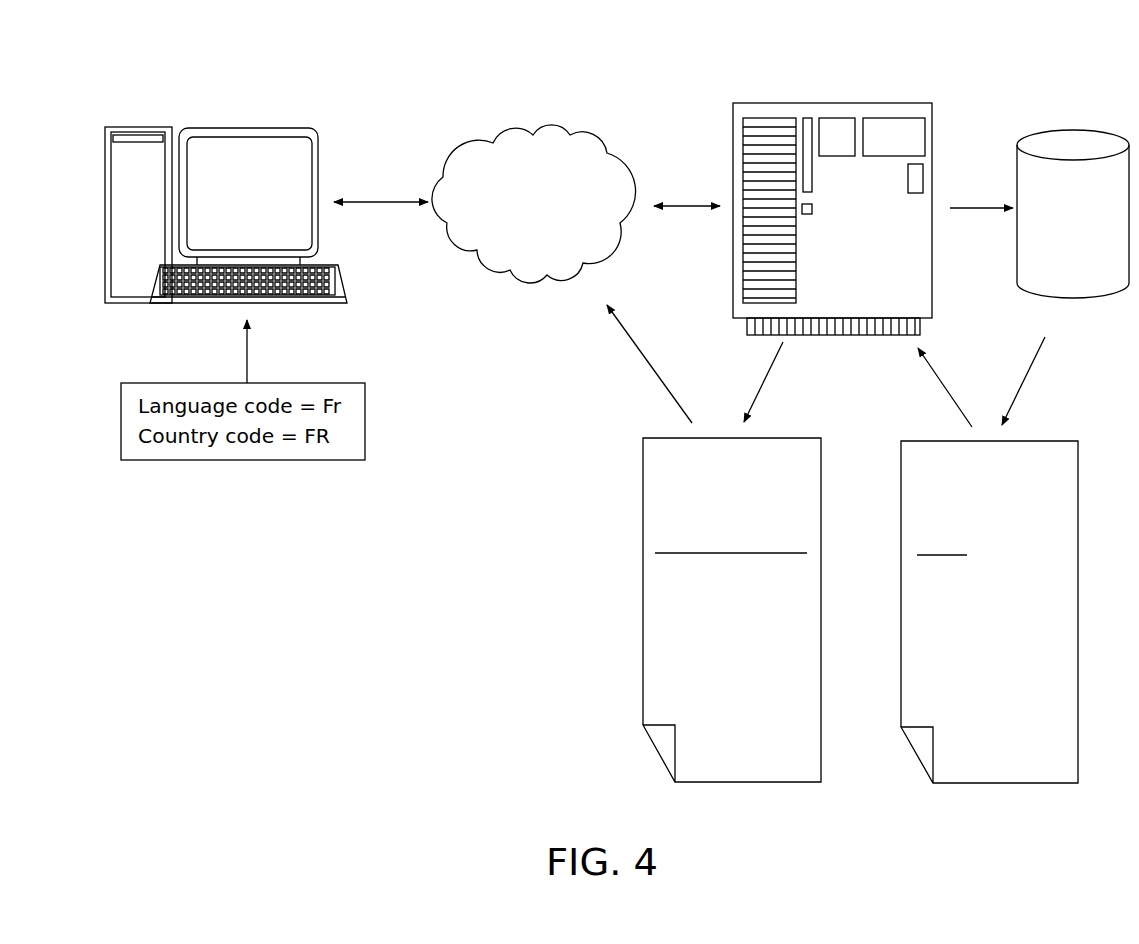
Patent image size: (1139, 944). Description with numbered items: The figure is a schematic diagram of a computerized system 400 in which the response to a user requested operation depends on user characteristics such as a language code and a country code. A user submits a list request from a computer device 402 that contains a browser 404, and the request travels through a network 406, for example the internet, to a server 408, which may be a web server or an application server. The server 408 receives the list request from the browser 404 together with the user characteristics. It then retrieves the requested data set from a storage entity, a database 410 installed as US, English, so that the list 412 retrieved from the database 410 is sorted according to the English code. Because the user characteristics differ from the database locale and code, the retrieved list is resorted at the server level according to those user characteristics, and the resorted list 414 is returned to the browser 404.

The computerized system 400 is at (172, 70).
The computer device 402 is at (260, 130).
The browser 404 is at (293, 157).
The network 406 is at (564, 249).
The server 408 is at (933, 160).
The database 410 is at (1068, 130).
The list 412 is at (1047, 441).
The resorted list 414 is at (790, 438).